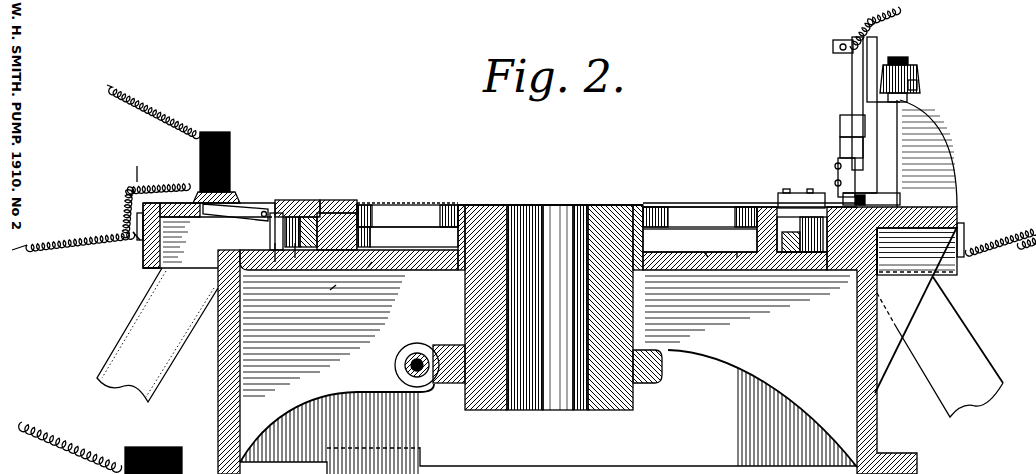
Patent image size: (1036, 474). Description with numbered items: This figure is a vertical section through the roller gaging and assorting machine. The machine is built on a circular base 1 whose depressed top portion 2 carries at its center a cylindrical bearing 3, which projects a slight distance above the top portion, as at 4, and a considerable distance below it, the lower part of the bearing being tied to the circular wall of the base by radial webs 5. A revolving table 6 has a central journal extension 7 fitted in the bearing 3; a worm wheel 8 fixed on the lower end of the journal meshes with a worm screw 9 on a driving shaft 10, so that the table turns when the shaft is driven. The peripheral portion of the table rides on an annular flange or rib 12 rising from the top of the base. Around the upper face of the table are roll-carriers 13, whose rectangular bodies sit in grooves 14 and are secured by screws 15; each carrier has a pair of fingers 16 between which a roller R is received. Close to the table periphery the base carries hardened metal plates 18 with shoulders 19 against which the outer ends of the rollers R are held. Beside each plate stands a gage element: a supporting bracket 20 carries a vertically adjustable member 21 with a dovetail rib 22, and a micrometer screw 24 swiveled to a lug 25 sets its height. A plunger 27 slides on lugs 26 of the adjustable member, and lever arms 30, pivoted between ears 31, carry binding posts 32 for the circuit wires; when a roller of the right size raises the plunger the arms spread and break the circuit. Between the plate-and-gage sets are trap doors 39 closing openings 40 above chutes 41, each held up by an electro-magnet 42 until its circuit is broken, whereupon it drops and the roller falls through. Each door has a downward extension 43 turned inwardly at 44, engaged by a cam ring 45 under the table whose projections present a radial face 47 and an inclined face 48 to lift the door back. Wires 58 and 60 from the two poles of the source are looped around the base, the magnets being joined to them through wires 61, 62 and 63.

The circular base 1 is at (143, 250).
The top portion 2 is at (368, 267).
The cylindrical bearing 3 is at (470, 298).
The projecting portion of bearing 4 is at (474, 230).
The radial webs 5 is at (546, 336).
The revolving table 6 is at (314, 209).
The central journal extension 7 is at (503, 393).
The worm wheel 8 is at (475, 394).
The worm screw 9 is at (395, 365).
The driving shaft 10 is at (416, 357).
The annular flange or rib 12 is at (295, 258).
The roll-carriers 13 is at (778, 199).
The grooves or recesses 14 is at (380, 205).
The screws 15 is at (805, 189).
The fingers 16 is at (838, 218).
The hardened metal plates 18 is at (882, 255).
The shoulders 19 is at (900, 255).
The supporting bracket 20 is at (887, 170).
The vertically adjustable member 21 is at (876, 61).
The dovetail rib 22 is at (906, 77).
The micrometer screw 24 is at (908, 99).
The lug 25 is at (917, 89).
The lugs 26 is at (843, 126).
The plunger 27 is at (845, 146).
The lever arms 30 is at (855, 72).
The ears or lugs 31 is at (845, 168).
The binding posts 32 is at (840, 52).
The trap doors 39 is at (248, 207).
The openings 40 is at (209, 235).
The hoppers or chutes 41 is at (165, 318).
The electro-magnet 42 is at (231, 157).
The angular downward extension 43 is at (285, 203).
The inwardly turned end 44 is at (275, 262).
The ratchet wheel or cam ring 45 is at (340, 206).
The radial face 47 is at (330, 292).
The inclined or cam face 48 is at (810, 253).
The wire 58 is at (137, 225).
The wire 60 is at (135, 243).
The wires 61 is at (151, 194).
The wires 62 is at (176, 121).
The wires 63 is at (68, 245).
The rollers R is at (850, 207).